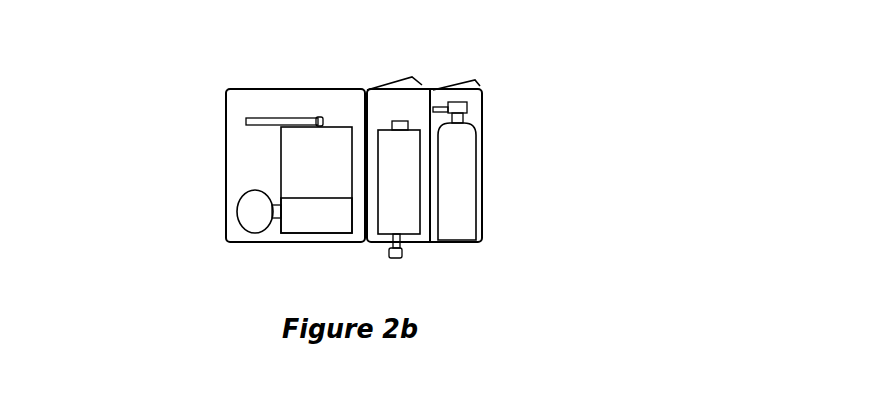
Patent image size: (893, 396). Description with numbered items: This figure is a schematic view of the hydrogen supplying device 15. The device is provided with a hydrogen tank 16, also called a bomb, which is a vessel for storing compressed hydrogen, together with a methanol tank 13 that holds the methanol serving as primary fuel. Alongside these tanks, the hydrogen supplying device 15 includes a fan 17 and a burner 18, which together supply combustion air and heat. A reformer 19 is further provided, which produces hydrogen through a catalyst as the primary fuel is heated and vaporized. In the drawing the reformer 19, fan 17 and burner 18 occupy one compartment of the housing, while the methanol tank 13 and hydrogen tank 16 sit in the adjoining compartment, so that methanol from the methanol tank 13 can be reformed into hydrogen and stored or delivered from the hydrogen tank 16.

The hydrogen supplying device 15 is at (221, 120).
The reformer 19 is at (336, 127).
The methanol tank 13 is at (415, 123).
The hydrogen tank 16 is at (482, 145).
The fan 17 is at (246, 231).
The burner 18 is at (313, 234).